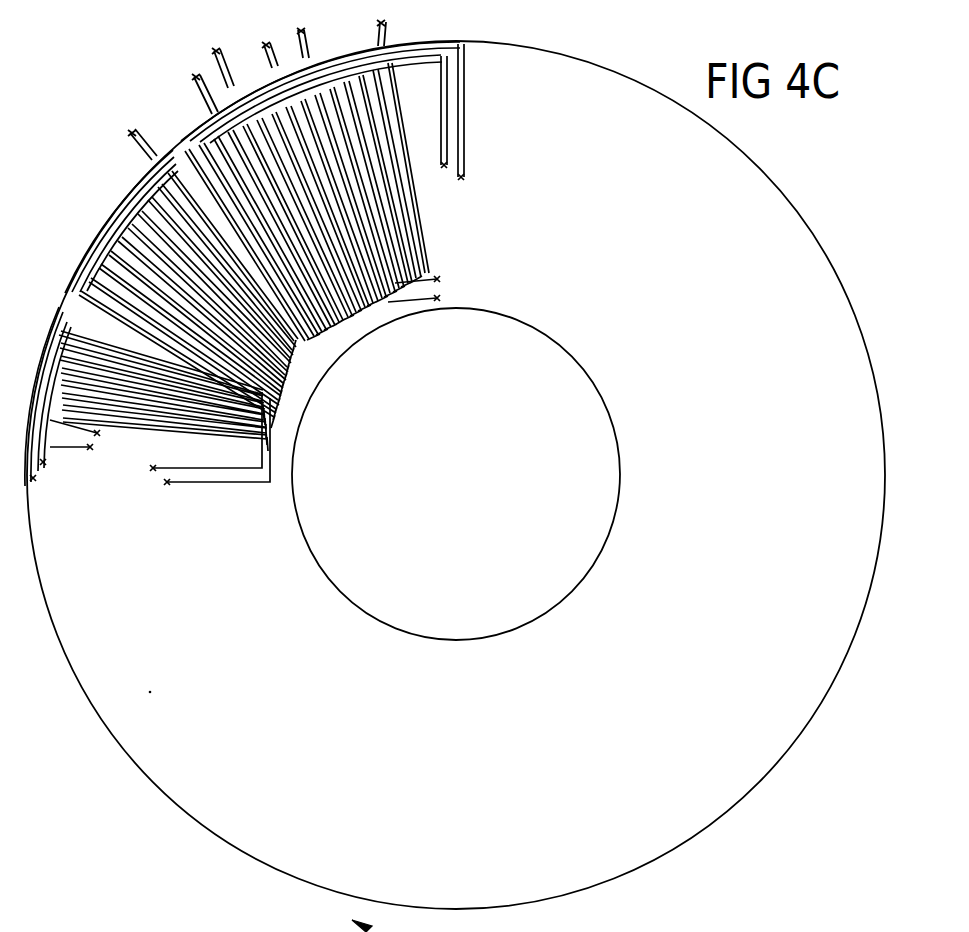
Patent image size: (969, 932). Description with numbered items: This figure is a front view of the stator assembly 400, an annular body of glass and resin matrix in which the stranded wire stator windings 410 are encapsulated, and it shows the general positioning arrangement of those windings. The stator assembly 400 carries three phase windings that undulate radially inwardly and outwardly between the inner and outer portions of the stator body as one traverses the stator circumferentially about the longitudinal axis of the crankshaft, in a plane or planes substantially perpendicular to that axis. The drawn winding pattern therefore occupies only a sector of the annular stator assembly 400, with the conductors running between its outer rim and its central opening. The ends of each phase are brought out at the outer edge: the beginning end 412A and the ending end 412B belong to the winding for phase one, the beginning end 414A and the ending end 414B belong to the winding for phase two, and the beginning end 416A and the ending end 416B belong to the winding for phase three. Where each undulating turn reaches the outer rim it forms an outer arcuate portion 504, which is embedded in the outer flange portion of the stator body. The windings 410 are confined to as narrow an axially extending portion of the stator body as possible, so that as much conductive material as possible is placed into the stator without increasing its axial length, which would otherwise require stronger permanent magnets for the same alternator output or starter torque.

The stator assembly 400 is at (740, 804).
The stranded wire stator windings 410 is at (101, 240).
The beginning end of phase one winding 412A is at (337, 21).
The ending end of phase one winding 412B is at (200, 92).
The beginning end of phase two winding 414A is at (385, 30).
The ending end of phase two winding 414B is at (266, 46).
The beginning end of phase three winding 416A is at (222, 64).
The ending end of phase three winding 416B is at (141, 144).
The outer arcuate portions 504 is at (516, 922).